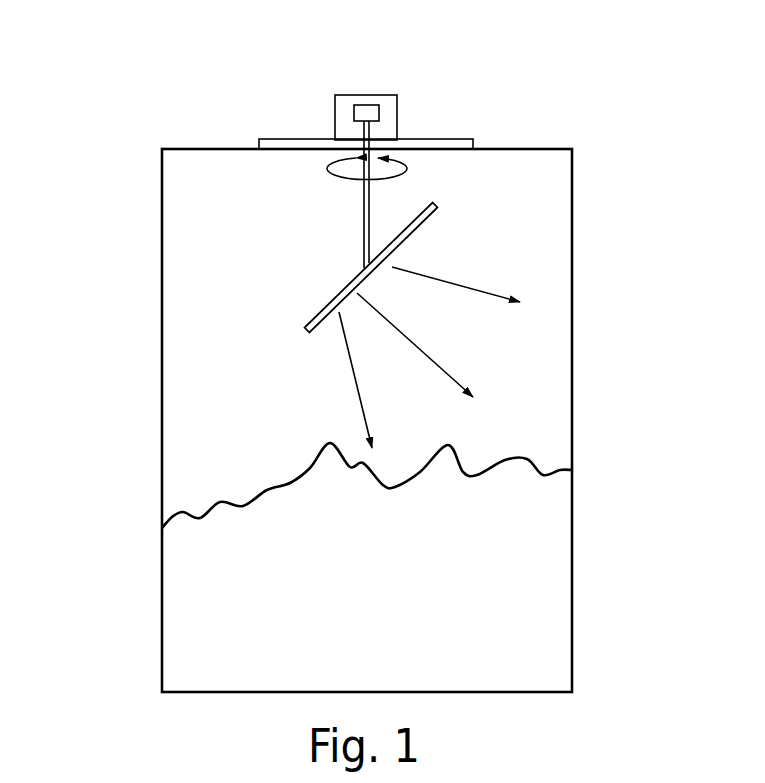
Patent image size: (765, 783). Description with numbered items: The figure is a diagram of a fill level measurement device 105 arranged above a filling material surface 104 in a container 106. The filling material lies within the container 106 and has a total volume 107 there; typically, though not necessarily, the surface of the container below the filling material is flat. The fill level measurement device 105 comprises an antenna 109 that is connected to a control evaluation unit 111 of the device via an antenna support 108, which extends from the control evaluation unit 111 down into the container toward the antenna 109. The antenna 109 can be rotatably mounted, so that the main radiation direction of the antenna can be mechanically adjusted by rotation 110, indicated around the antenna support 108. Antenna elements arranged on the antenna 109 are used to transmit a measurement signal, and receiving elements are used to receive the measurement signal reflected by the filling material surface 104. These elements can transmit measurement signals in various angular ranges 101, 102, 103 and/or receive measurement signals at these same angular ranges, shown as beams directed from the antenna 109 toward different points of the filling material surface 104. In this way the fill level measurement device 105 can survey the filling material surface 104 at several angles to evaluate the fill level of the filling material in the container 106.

The angular range 101 is at (363, 407).
The angular range 102 is at (438, 362).
The angular range 103 is at (460, 284).
The filling material surface 104 is at (458, 457).
The fill level measurement device 105 is at (397, 127).
The container 106 is at (162, 592).
The total volume 107 is at (550, 561).
The antenna support 108 is at (363, 213).
The antenna 109 is at (440, 200).
The rotation 110 is at (327, 165).
The control evaluation unit 111 is at (355, 112).